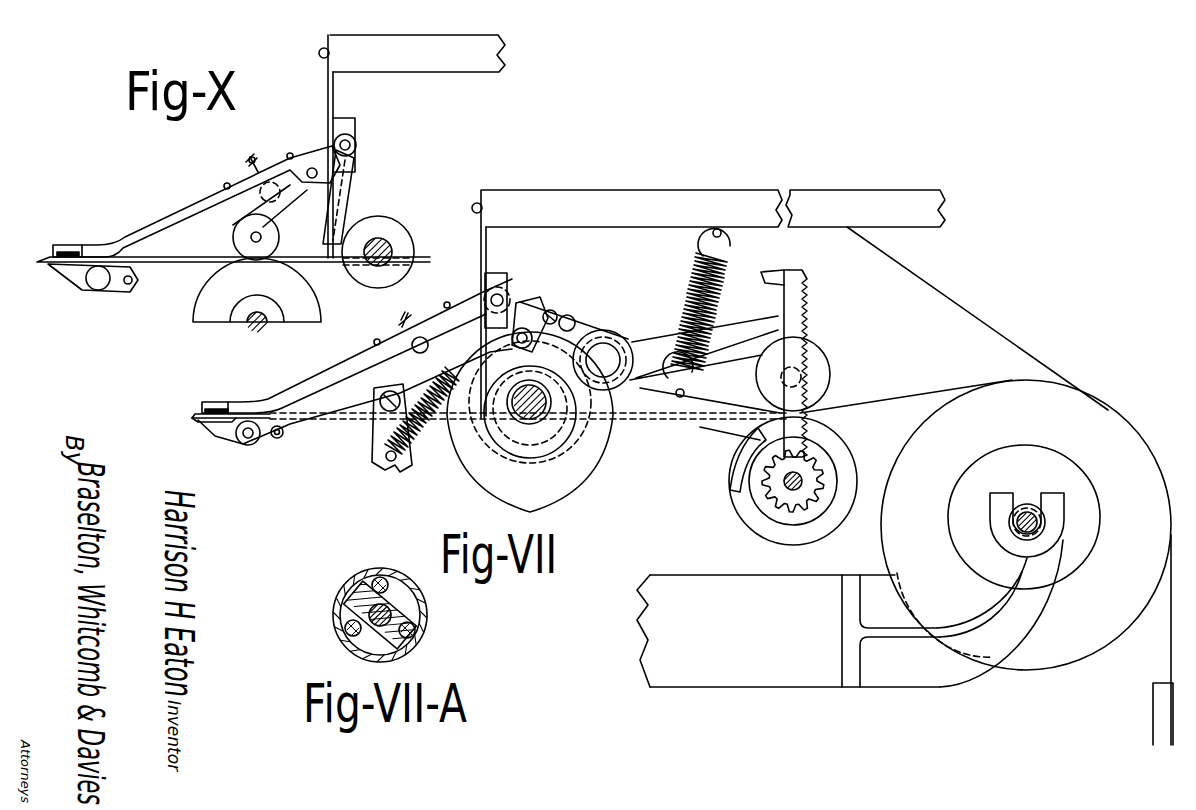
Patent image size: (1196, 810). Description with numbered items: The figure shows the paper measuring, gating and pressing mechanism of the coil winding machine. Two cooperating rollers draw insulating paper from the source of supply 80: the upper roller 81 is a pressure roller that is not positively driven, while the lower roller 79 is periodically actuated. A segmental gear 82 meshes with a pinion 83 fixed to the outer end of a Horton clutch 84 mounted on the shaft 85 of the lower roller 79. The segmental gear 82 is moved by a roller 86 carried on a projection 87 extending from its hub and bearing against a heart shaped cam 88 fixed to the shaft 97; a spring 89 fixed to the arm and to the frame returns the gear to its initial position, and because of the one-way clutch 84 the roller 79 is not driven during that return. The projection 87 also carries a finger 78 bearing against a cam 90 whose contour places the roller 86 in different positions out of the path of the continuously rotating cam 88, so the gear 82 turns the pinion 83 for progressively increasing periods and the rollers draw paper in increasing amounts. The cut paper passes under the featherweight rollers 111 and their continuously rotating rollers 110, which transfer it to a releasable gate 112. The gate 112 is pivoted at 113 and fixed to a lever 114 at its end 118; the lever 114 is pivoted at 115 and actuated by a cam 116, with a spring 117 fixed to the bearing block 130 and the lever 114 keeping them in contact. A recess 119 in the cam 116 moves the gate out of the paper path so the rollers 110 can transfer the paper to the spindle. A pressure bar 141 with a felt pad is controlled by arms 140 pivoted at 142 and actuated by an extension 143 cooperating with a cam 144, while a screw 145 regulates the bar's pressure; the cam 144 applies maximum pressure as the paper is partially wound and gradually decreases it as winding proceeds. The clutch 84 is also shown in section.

In FIG. 7, the finger 78 is at (483, 347).
In FIG. 7, the lower roller 79 is at (843, 460).
In FIG. 7, the source of supply 80 is at (980, 436).
In FIG. 7, the upper roller 81 is at (822, 383).
In FIG. 7, the segmental gear 82 is at (793, 325).
In FIG. 7, the pinion 83 is at (808, 480).
In FIG. 7, the Horton clutch 84 is at (767, 497).
In FIG. 7A, the Horton clutch 84 is at (400, 650).
In FIG. 7, the shaft 85 is at (792, 489).
In FIG. 7, the roller 86 is at (506, 290).
In FIG. 7, the projection 87 is at (526, 329).
In FIG. 7, the heart shaped cam 88 is at (567, 478).
In FIG. 7, the spring 89 is at (690, 290).
In FIG. 7, the cam 90 is at (563, 332).
In FIG. 10, the shaft 97 is at (385, 241).
In FIG. 7, the shaft 97 is at (550, 403).
In FIG. 10, the continuously rotating rollers 110 is at (308, 313).
In FIG. 10, the featherweight rollers 111 is at (277, 239).
In FIG. 7, the gate 112 is at (210, 427).
In FIG. 7, the pivot 113 is at (244, 445).
In FIG. 7, the lever 114 is at (312, 427).
In FIG. 7, the pivot 115 is at (389, 392).
In FIG. 7, the cam 116 is at (512, 423).
In FIG. 7, the spring 117 is at (413, 441).
In FIG. 7, the end 118 is at (279, 439).
In FIG. 7, the recess 119 is at (611, 327).
In FIG. 7, the bearing block 130 is at (387, 466).
In FIG. 10, the arms 140 is at (163, 222).
In FIG. 10, the pressure bar 141 is at (61, 251).
In FIG. 7, the pressure bar 141 is at (215, 411).
In FIG. 10, the pivot 142 is at (354, 150).
In FIG. 10, the extension 143 is at (343, 212).
In FIG. 10, the cam 144 is at (404, 245).
In FIG. 10, the screw 145 is at (253, 165).